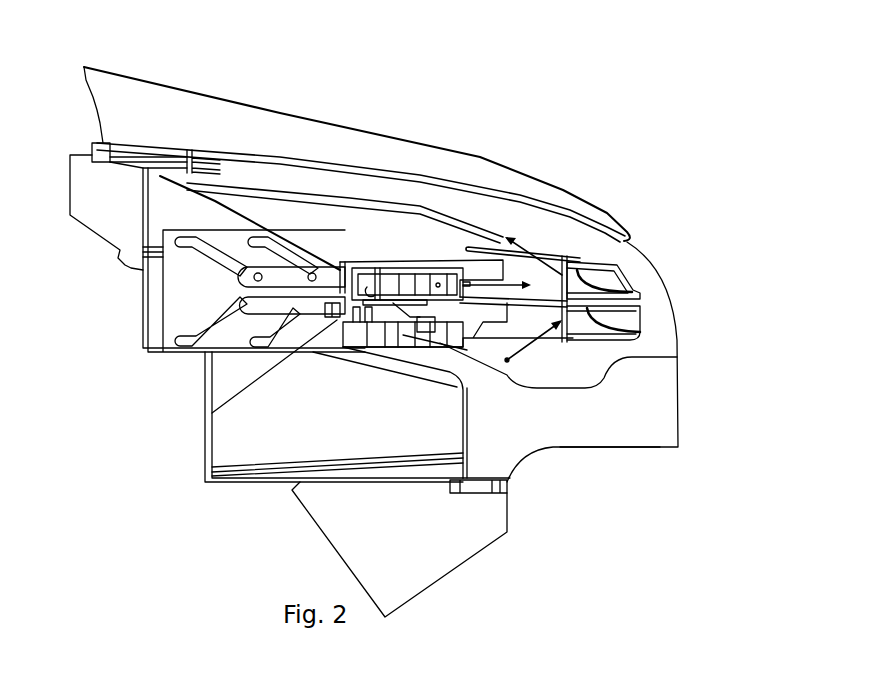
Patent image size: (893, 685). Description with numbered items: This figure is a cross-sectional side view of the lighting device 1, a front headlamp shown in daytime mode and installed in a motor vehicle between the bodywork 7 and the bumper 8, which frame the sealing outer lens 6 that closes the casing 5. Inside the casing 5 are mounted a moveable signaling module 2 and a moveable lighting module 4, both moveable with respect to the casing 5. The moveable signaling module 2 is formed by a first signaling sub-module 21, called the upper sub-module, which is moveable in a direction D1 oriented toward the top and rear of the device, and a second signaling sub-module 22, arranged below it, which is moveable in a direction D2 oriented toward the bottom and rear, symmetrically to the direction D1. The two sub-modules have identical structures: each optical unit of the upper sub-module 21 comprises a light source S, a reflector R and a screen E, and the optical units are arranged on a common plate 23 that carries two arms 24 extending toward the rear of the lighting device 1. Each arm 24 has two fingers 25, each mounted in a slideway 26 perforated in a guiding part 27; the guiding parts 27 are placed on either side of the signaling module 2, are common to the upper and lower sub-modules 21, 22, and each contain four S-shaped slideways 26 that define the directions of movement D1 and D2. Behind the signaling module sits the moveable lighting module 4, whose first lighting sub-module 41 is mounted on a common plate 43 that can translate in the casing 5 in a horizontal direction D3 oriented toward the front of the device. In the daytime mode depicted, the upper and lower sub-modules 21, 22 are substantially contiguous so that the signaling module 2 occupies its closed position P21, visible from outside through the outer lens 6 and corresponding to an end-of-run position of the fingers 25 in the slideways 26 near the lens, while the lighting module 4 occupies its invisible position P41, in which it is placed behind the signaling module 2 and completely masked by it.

The lighting device 1 is at (338, 86).
The moveable signaling module 2 is at (567, 255).
The moveable lighting module 4 is at (388, 262).
The casing 5 is at (205, 397).
The outer lens 6 is at (677, 357).
The bodywork 7 is at (495, 175).
The bumper 8 is at (597, 437).
The first signaling sub-module 21 is at (632, 280).
The second signaling sub-module 22 is at (643, 318).
The common plate 23 is at (468, 245).
The arm 24 is at (325, 260).
The finger 25 is at (312, 272).
The slideway 26 is at (255, 238).
The guiding part 27 is at (170, 282).
The first lighting sub-module 41 is at (440, 303).
The common plate 43 is at (333, 330).
The closed position P21 is at (512, 238).
The invisible position P41 is at (373, 350).
The reflector R is at (577, 260).
The light source S is at (597, 262).
The screen E is at (627, 272).
The direction D1 is at (533, 253).
The direction D2 is at (533, 347).
The direction D3 is at (499, 274).